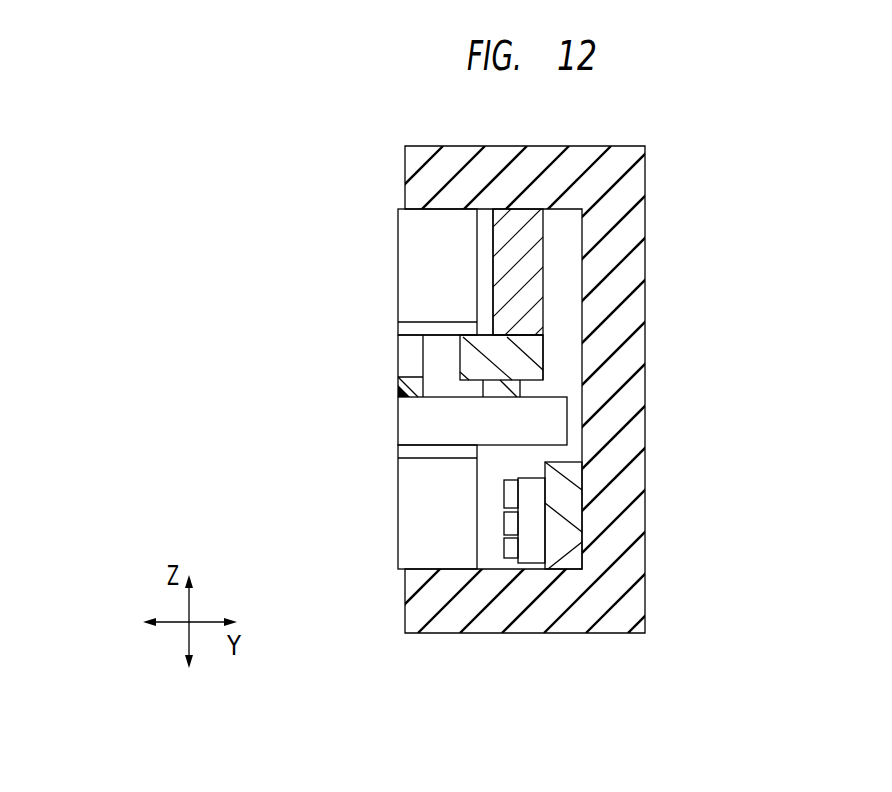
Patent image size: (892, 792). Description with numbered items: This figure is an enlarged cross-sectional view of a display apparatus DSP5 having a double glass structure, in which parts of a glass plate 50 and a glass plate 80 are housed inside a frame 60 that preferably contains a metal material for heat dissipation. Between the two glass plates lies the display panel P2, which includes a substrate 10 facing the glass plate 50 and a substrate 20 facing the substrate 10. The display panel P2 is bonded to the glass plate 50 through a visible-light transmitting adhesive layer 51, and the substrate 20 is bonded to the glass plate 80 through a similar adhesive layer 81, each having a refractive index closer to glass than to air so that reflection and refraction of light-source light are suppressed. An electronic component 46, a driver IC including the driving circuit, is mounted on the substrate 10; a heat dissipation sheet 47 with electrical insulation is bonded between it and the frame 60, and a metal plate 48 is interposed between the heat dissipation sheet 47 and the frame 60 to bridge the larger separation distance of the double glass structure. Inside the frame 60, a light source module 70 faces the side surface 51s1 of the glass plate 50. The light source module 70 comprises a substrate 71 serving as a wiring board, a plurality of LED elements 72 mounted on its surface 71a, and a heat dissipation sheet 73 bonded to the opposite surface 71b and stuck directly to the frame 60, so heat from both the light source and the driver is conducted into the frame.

The display apparatus DSP5 is at (238, 353).
The frame 60 is at (628, 193).
The glass plate 80 is at (417, 247).
The adhesive layer 81 is at (415, 327).
The metal plate 48 is at (532, 257).
The heat dissipation sheet 47 is at (531, 338).
The electronic component 46 is at (512, 390).
The display panel P2 is at (345, 330).
The substrate 20 is at (413, 362).
The substrate 10 is at (415, 422).
The glass plate 50 is at (417, 533).
The adhesive layer 51 is at (416, 453).
The side surface 51s1 is at (491, 472).
The light source module 70 is at (332, 598).
The substrate 71 is at (520, 561).
The LED elements 72 is at (503, 490).
The heat dissipation sheet 73 is at (573, 556).
The surface 71a is at (504, 513).
The surface 71b is at (556, 523).